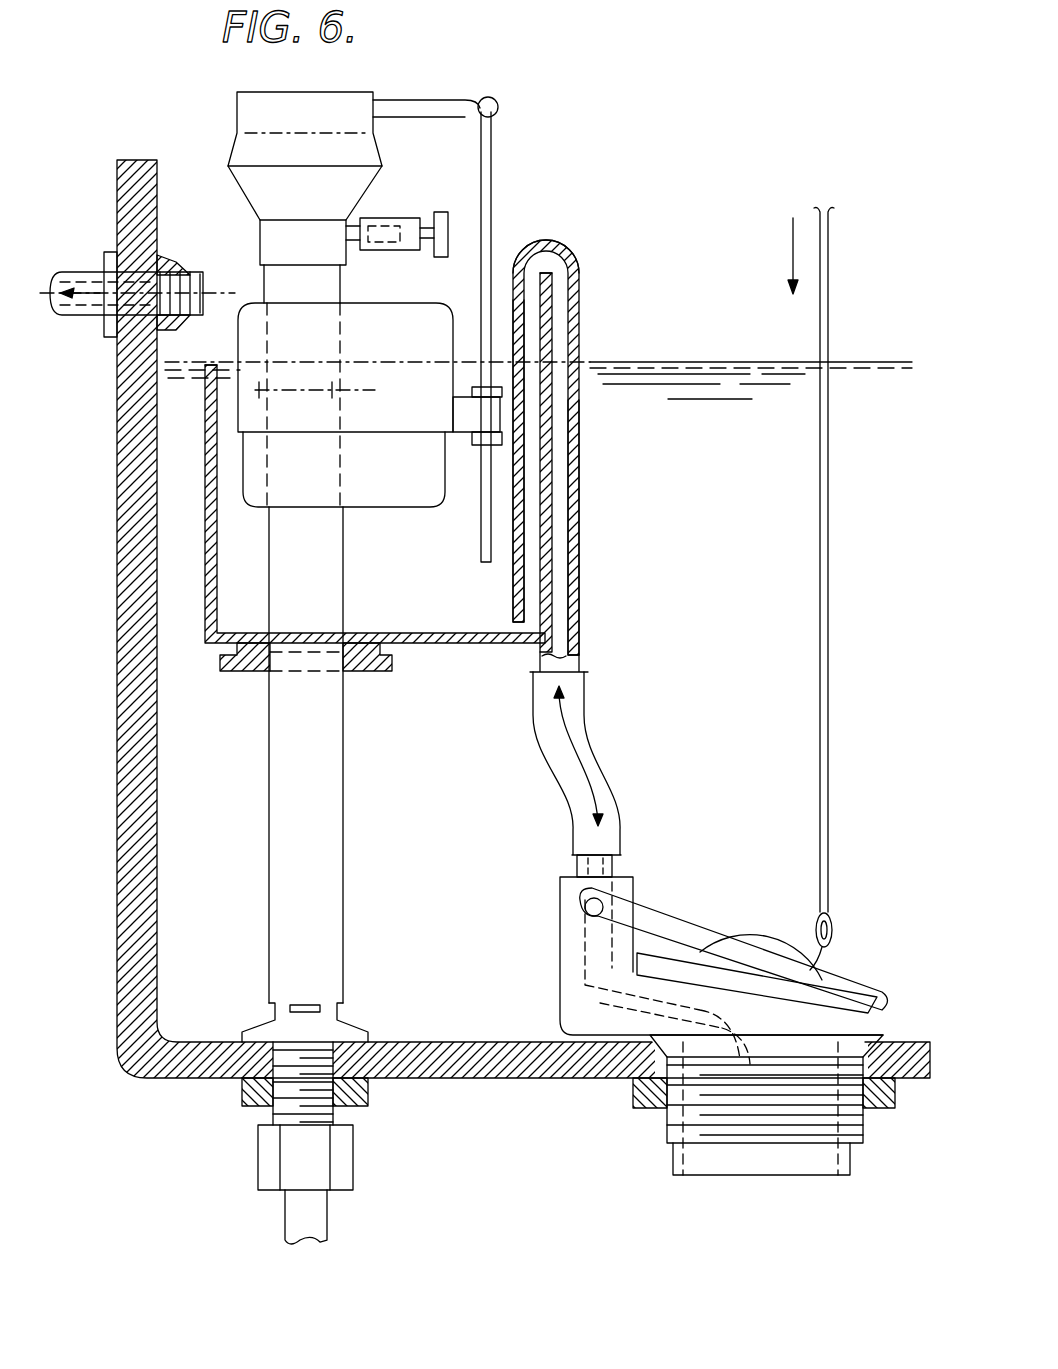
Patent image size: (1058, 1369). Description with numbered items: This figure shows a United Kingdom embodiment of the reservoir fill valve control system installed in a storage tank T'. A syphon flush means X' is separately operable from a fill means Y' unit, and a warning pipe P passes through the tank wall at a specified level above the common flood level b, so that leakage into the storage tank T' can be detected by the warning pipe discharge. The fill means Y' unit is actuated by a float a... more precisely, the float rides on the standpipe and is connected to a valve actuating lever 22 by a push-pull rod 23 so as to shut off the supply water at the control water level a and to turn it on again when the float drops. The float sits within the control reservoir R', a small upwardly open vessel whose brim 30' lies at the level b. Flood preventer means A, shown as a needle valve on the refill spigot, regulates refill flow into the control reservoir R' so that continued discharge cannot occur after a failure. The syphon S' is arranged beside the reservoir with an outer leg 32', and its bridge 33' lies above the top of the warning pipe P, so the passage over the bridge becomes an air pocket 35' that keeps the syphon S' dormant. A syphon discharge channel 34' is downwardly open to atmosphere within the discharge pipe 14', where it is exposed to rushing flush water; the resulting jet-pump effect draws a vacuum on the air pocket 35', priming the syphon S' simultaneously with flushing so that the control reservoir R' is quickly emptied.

The storage tank T' is at (523, 647).
The warning pipe P is at (192, 266).
The control reservoir R' is at (375, 504).
The brim 30' is at (224, 319).
The fill means unit Y' is at (330, 175).
The control water level a is at (340, 392).
The flood preventer means A is at (405, 227).
The valve actuating lever 22 is at (432, 103).
The push-pull rod 23 is at (496, 167).
The syphon means S' is at (603, 435).
The outer siphon leg 32' is at (580, 461).
The bridge 33' is at (592, 257).
The syphon discharge channel 34' is at (602, 462).
The air pocket 35' is at (554, 235).
The common flood level b is at (700, 362).
The syphon flush means X' is at (734, 611).
The discharge pipe 14' is at (727, 1026).